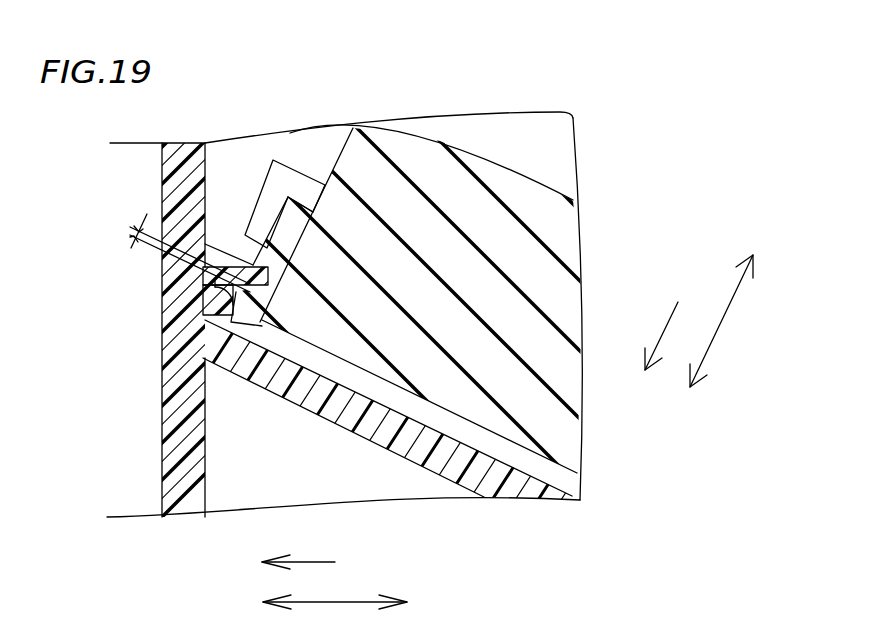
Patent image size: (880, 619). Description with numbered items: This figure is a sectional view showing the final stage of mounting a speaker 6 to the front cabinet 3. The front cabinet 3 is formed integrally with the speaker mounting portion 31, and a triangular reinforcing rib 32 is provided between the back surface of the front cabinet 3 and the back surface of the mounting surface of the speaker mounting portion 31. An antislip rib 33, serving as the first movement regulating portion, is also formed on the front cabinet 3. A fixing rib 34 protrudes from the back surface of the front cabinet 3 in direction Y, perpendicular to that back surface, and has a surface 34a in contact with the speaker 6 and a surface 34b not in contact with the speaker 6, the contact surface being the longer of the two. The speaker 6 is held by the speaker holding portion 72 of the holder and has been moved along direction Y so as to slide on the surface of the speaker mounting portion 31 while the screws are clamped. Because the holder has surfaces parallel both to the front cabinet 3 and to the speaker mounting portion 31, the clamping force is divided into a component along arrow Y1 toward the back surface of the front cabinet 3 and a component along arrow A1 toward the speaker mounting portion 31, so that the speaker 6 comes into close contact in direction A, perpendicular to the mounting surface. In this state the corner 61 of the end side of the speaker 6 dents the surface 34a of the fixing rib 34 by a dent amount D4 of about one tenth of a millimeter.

The front cabinet 3 is at (160, 452).
The speaker 6 is at (400, 150).
The speaker mounting portion 31 is at (540, 473).
The reinforcing rib 32 is at (232, 488).
The antislip rib 33 is at (227, 245).
The fixing rib 34 is at (385, 393).
The surface in contact with the speaker 34a is at (208, 321).
The surface not in contact with the speaker 34b is at (210, 300).
The corner 61 is at (255, 263).
The speaker holding portion 72 is at (272, 193).
The dent amount D4 is at (174, 247).
The direction A is at (721, 321).
The arrow A1 is at (655, 334).
The direction Y is at (335, 591).
The arrow Y1 is at (298, 551).